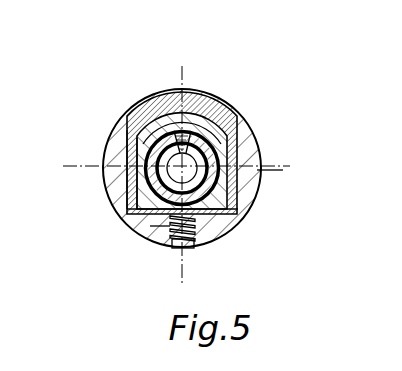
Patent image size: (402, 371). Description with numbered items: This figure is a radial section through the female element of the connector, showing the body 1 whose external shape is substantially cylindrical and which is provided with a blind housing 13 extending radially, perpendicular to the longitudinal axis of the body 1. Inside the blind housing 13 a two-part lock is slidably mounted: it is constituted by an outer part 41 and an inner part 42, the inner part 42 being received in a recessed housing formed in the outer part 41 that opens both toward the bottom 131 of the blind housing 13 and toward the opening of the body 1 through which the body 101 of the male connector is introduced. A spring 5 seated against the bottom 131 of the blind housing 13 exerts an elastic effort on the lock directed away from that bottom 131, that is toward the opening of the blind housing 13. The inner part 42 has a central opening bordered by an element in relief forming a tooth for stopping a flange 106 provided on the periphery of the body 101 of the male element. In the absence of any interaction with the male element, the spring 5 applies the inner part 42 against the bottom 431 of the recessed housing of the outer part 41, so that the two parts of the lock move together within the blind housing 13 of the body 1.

The body 1 is at (255, 137).
The body of the male connector 101 is at (258, 177).
The blind housing 13 is at (213, 227).
The bottom 131 is at (193, 244).
The spring 5 is at (148, 226).
The inner part 42 is at (157, 93).
The outer part 41 is at (220, 93).
The bottom of the recessed housing 431 is at (197, 95).
The flange 106 is at (127, 125).